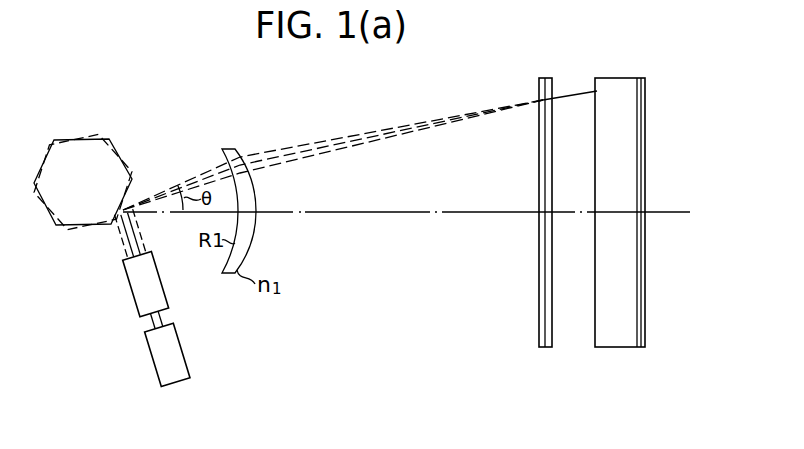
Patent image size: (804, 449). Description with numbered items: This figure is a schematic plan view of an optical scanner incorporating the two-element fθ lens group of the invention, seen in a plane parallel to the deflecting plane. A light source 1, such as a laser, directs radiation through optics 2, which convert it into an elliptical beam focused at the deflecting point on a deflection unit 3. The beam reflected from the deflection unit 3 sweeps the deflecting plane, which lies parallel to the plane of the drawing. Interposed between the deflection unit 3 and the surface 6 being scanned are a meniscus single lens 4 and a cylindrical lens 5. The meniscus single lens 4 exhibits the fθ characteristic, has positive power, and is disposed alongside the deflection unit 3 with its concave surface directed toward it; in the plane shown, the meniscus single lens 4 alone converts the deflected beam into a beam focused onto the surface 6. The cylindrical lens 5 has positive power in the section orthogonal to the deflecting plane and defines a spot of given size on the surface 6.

The light source 1 is at (182, 334).
The optics 2 is at (160, 287).
The deflection unit 3 is at (112, 150).
The meniscus single lens 4 is at (228, 149).
The cylindrical lens 5 is at (546, 78).
The surface being scanned 6 is at (637, 78).